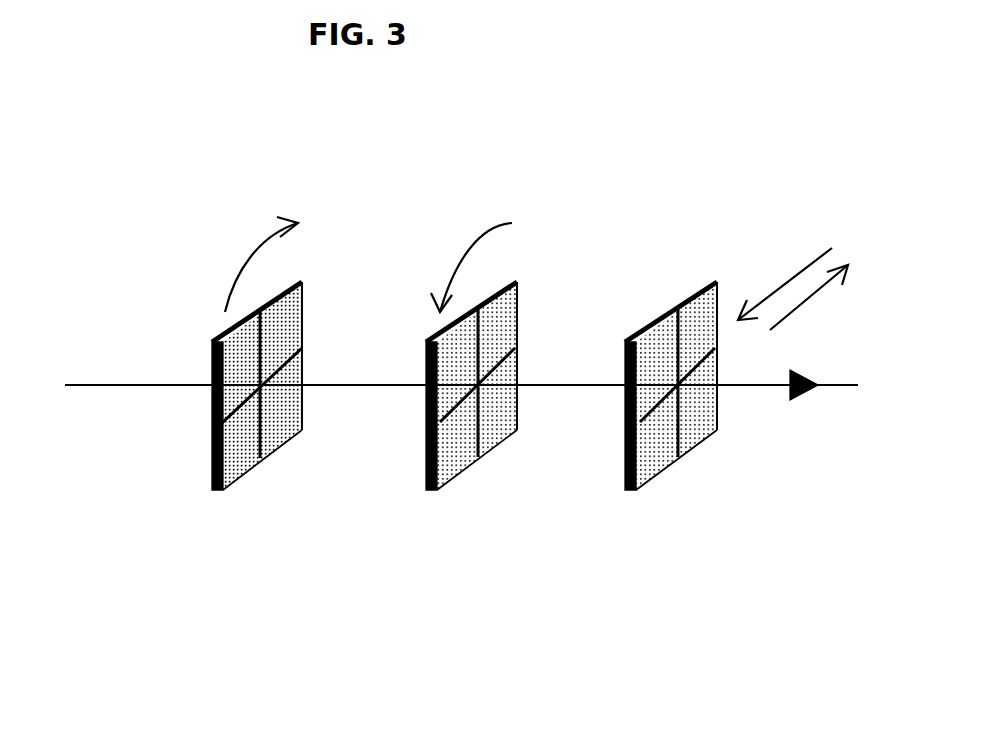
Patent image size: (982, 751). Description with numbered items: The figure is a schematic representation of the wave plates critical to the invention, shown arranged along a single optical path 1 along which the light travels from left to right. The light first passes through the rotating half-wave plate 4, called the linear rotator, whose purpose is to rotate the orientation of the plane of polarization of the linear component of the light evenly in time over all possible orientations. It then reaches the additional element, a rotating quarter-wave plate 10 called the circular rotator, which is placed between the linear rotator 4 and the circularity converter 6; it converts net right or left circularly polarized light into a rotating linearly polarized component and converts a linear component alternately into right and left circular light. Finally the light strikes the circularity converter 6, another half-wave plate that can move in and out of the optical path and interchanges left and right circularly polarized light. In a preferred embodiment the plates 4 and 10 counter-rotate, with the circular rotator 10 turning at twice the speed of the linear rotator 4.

The input light beam / optical axis 1 is at (457, 274).
The rotating half-wave plate 4 is at (298, 273).
The rotating quarter-wave plate 10 is at (515, 272).
The circularity converter 6 is at (713, 272).